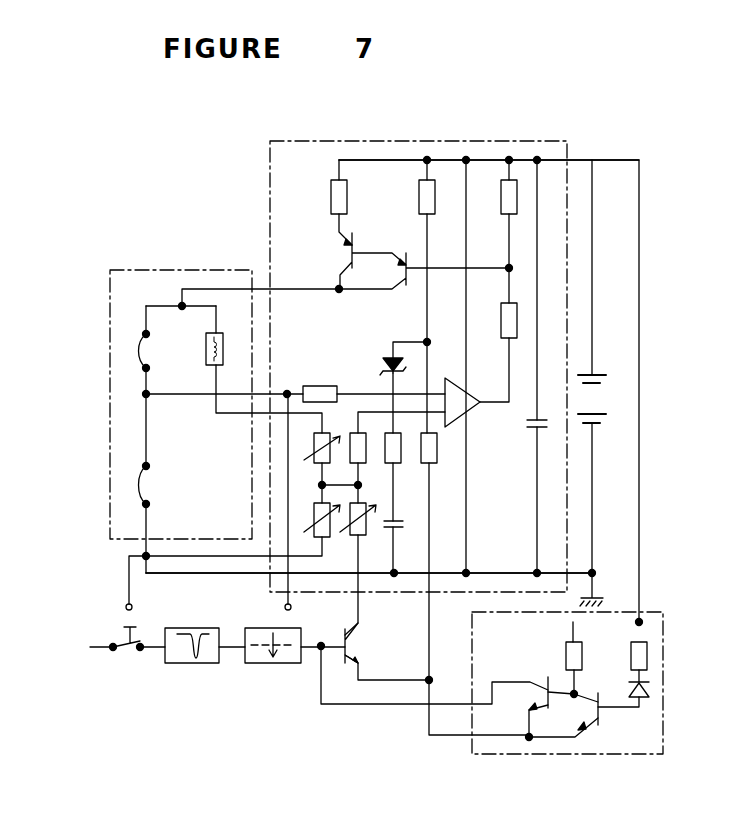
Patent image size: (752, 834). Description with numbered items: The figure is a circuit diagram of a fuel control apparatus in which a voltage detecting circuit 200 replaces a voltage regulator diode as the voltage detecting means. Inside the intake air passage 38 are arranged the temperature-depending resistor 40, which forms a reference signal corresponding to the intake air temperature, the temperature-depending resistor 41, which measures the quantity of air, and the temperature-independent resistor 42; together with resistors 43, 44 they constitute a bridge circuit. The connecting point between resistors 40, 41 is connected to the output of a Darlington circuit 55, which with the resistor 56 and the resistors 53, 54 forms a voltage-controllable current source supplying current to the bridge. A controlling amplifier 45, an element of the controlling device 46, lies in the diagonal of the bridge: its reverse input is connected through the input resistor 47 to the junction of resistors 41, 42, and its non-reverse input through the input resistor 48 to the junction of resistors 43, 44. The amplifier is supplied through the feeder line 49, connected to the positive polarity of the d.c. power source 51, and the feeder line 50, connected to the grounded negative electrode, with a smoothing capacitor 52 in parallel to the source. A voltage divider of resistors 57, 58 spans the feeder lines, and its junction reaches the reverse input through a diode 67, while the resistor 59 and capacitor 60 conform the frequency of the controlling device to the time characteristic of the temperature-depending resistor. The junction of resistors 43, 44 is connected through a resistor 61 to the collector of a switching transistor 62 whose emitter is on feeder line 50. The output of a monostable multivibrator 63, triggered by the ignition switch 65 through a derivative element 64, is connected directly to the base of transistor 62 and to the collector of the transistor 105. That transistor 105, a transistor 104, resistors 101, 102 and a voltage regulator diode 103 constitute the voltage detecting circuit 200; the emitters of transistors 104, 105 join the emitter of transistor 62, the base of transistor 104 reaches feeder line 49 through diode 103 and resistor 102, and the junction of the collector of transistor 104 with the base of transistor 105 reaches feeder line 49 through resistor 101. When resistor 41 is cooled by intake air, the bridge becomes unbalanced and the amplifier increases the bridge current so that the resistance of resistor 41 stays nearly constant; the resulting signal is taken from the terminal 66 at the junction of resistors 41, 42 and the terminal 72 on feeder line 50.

The intake air passage 38 is at (178, 270).
The temperature-depending resistor 40 is at (206, 350).
The temperature-depending resistor 41 is at (138, 356).
The resistor 42 is at (132, 486).
The resistor 43 is at (314, 447).
The resistor 44 is at (314, 514).
The controlling amplifier 45 is at (468, 396).
The controlling device 46 is at (440, 141).
The input resistor 47 is at (315, 386).
The input resistor 48 is at (350, 432).
The feeder line 49 is at (369, 160).
The feeder line 50 is at (498, 567).
The d.c. power source 51 is at (592, 395).
The smoothing capacitor 52 is at (527, 427).
The resistor 53 is at (502, 320).
The resistor 54 is at (502, 208).
The Darlington circuit 55 is at (380, 252).
The resistor 56 is at (332, 204).
The resistor 57 is at (419, 205).
The resistor 58 is at (437, 450).
The resistor 59 is at (401, 455).
The capacitor 60 is at (403, 524).
The resistor 61 is at (366, 530).
The switching transistor 62 is at (350, 636).
The monostable multivibrator 63 is at (272, 663).
The derivative element 64 is at (198, 663).
The ignition switch 65 is at (130, 652).
The terminal 66 is at (291, 607).
The diode 67 is at (389, 358).
The terminal 72 is at (133, 606).
The resistor 101 is at (566, 655).
The resistor 102 is at (647, 656).
The voltage regulator diode 103 is at (649, 690).
The transistor 104 is at (588, 724).
The transistor 105 is at (545, 706).
The voltage detecting circuit 200 is at (428, 735).